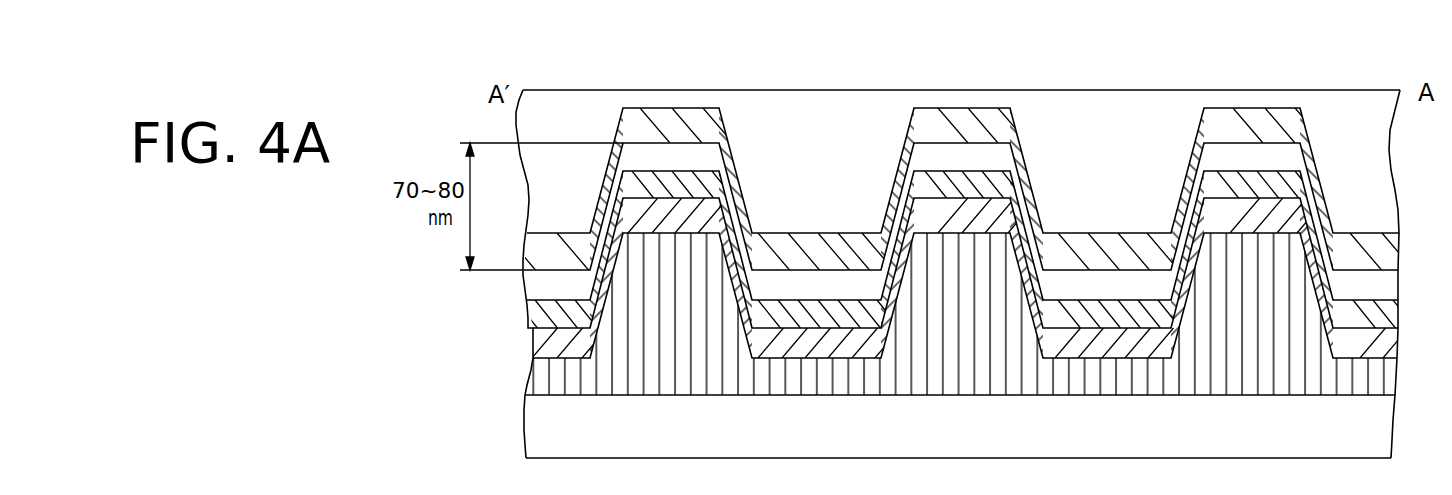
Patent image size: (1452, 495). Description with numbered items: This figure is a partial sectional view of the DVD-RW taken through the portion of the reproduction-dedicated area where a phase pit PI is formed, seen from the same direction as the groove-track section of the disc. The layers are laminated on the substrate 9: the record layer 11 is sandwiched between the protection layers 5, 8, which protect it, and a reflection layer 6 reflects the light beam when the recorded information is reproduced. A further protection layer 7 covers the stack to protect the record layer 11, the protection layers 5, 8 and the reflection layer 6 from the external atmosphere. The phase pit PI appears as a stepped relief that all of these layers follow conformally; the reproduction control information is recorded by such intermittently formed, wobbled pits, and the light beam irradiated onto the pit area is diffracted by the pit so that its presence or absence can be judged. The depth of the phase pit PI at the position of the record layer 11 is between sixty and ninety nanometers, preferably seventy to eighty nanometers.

The protection layer 5 is at (1388, 242).
The reflection layer 6 is at (1395, 338).
The protection layer 7 is at (1380, 140).
The protection layer 8 is at (1390, 308).
The substrate 9 is at (1393, 368).
The record layer 11 is at (1390, 283).
The phase pit PI is at (1165, 139).